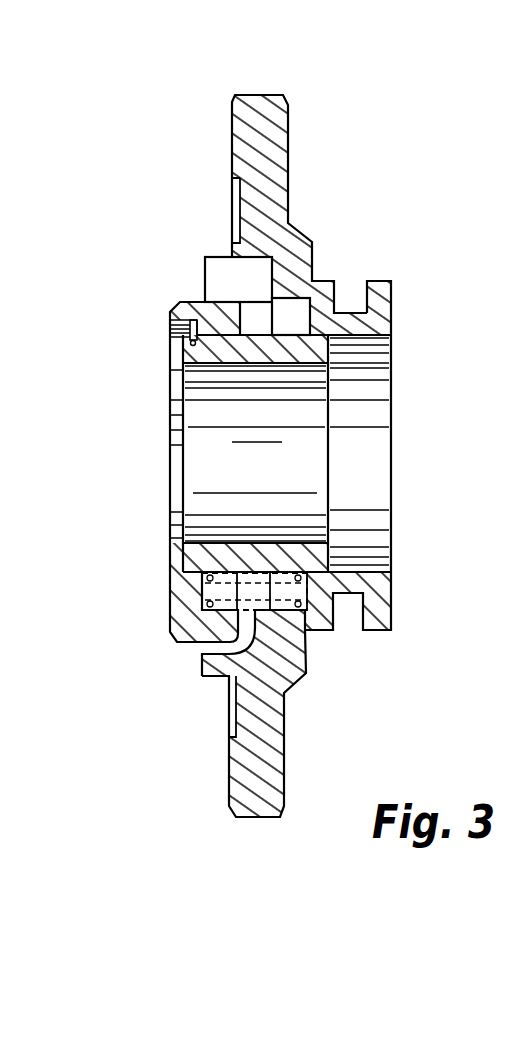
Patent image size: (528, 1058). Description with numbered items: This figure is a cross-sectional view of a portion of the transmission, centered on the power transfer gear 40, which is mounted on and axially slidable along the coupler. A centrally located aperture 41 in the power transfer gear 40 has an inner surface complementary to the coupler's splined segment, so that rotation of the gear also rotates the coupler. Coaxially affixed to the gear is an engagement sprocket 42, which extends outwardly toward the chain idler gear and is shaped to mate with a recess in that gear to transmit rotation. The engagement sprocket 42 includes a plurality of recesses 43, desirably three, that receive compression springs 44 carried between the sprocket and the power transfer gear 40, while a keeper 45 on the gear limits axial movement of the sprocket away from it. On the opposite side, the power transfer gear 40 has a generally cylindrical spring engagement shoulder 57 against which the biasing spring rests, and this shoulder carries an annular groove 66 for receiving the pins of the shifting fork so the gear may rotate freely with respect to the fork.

The power transfer gear 40 is at (287, 712).
The aperture 41 is at (227, 367).
The engagement sprocket 42 is at (177, 308).
The recesses 43 is at (203, 594).
The compression springs 44 is at (200, 652).
The keeper 45 is at (177, 351).
The spring engagement shoulder 57 is at (394, 297).
The annular groove 66 is at (342, 310).